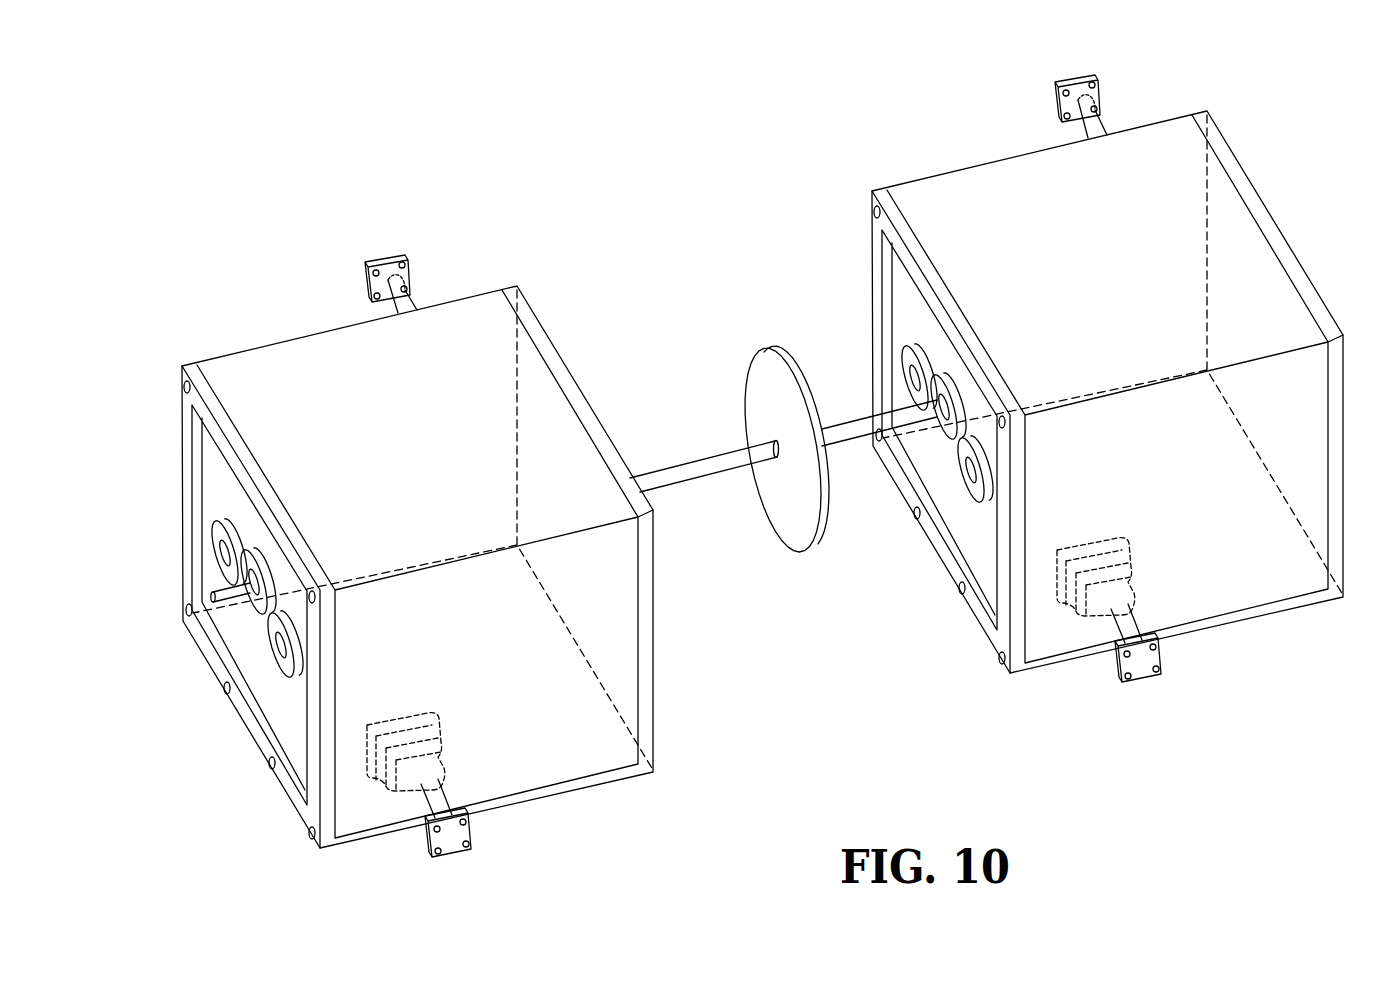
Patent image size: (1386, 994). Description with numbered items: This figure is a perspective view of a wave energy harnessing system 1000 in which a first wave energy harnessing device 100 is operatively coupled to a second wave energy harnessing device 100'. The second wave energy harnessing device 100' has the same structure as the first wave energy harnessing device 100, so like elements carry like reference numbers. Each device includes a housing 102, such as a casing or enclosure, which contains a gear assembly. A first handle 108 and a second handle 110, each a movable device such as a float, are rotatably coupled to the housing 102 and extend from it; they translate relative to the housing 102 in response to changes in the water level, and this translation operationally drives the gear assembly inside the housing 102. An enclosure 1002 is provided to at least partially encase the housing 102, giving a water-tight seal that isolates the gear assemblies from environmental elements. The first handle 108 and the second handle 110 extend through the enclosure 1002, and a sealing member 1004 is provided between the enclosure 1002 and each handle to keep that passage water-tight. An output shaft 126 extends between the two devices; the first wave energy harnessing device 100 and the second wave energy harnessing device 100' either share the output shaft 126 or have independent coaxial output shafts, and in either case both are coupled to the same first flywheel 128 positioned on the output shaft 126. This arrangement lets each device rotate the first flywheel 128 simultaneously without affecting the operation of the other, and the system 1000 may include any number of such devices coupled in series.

The wave energy harnessing system 1000 is at (582, 127).
The wave energy harnessing device 100 is at (413, 518).
The second wave energy harnessing device 100' is at (1100, 355).
The housing 102 is at (243, 350).
The first handle 108 is at (413, 268).
The second handle 110 is at (455, 838).
The output shaft 126 is at (708, 460).
The first flywheel 128 is at (755, 375).
The enclosure 1002 is at (557, 724).
The sealing member 1004 is at (368, 748).